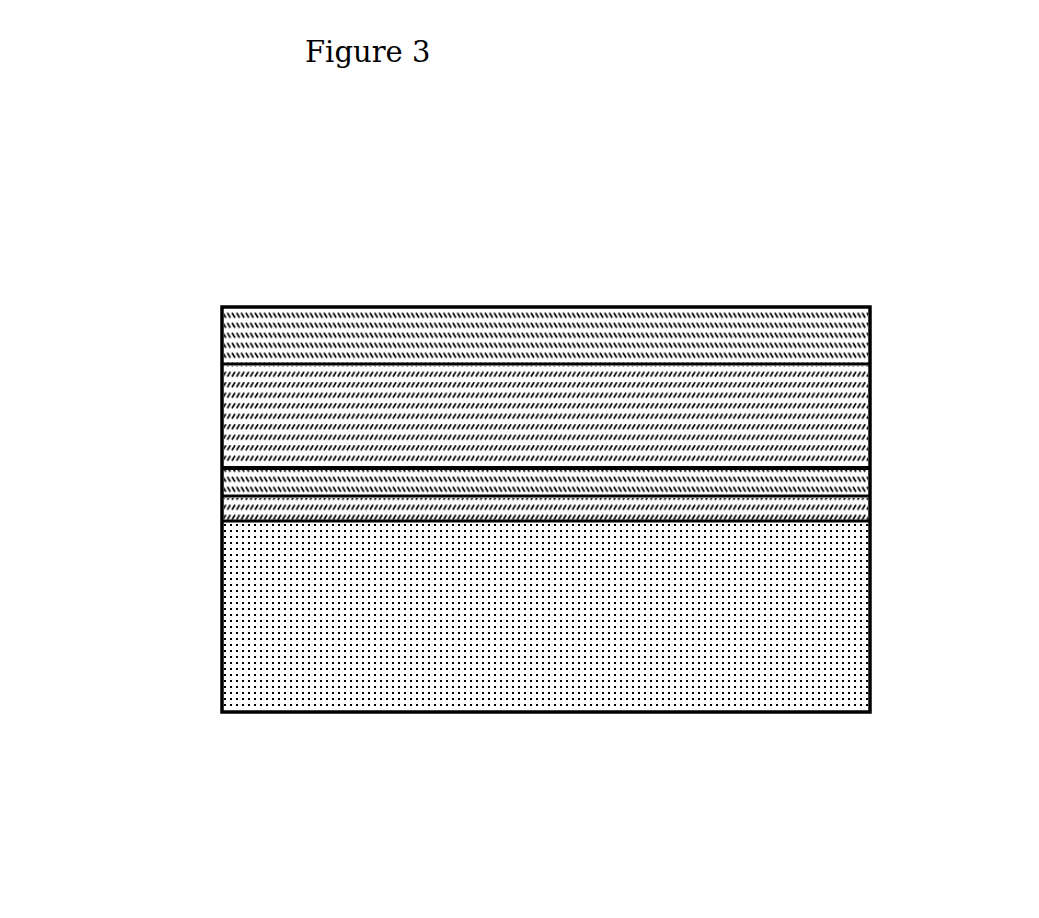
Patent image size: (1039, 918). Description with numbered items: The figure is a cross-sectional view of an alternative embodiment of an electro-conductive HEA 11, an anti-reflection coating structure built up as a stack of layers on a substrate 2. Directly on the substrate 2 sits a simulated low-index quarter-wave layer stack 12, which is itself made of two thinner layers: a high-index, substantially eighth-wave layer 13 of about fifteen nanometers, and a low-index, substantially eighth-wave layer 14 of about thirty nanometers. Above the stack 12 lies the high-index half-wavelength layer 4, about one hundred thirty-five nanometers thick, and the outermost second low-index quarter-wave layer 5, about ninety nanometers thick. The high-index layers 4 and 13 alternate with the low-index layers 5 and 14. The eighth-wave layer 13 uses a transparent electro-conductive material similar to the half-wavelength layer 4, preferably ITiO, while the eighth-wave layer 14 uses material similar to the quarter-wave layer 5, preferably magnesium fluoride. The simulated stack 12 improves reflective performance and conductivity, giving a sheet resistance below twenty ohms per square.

The electro-conductive HEA 11 is at (565, 228).
The second low-index ¼-wave layer 5 is at (240, 322).
The high-index ½-wavelength layer 4 is at (850, 415).
The low-index ⅛-wave layer 14 is at (240, 485).
The high-index ⅛-wave layer 13 is at (240, 508).
The simulated low-index ¼-wave layer stack 12 is at (908, 470).
The substrate 2 is at (605, 658).